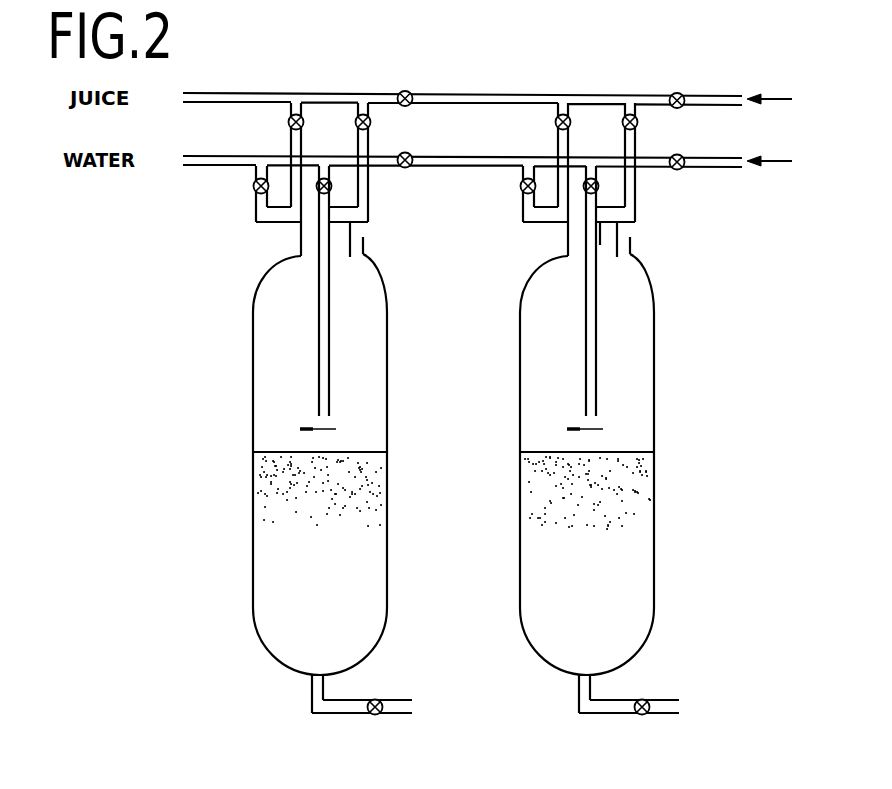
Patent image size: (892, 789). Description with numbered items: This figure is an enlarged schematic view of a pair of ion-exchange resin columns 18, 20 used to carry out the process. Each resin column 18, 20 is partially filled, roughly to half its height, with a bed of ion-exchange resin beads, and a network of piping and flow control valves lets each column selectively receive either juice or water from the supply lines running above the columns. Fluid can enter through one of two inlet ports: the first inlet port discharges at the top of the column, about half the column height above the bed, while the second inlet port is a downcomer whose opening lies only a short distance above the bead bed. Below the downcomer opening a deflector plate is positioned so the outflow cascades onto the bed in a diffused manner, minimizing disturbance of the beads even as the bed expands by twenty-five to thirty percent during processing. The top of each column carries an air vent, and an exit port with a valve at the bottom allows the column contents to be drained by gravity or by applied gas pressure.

The resin column 18 is at (253, 411).
The resin column 20 is at (620, 464).